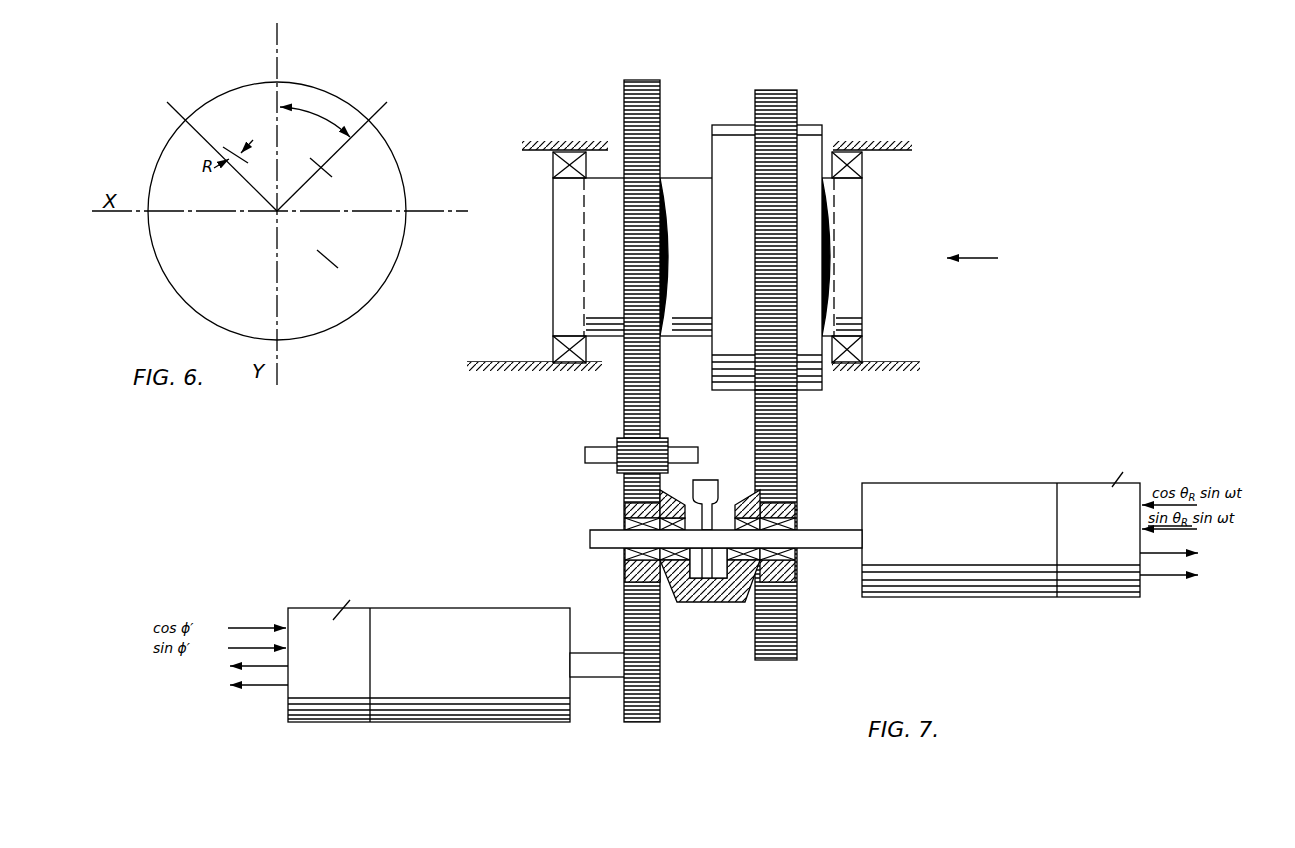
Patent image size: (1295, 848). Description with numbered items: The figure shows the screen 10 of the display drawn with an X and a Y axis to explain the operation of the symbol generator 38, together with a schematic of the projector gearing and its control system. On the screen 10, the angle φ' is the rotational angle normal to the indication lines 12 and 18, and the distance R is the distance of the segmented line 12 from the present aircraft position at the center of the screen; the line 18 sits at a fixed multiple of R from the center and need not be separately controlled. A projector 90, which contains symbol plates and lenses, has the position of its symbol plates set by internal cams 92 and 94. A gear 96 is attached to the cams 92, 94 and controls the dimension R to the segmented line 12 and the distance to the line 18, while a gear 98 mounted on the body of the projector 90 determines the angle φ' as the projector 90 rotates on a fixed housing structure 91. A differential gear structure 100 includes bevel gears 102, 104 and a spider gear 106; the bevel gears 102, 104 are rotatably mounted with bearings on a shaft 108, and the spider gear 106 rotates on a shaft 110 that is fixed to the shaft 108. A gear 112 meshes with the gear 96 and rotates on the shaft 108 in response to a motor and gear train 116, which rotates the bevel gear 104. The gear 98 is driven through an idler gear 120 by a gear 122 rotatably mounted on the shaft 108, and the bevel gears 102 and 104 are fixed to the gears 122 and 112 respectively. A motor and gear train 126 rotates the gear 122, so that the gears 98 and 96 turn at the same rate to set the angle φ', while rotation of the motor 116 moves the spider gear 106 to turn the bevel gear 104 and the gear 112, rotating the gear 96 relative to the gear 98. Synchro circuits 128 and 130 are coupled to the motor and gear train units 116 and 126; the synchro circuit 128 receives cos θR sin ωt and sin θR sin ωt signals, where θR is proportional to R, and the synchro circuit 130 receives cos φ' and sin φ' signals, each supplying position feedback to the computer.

In FIG. 6, the screen 10 is at (395, 155).
In FIG. 6, the indication line 12 is at (329, 266).
In FIG. 6, the line 18 is at (332, 173).
In FIG. 7, the symbol generator 38 is at (590, 539).
In FIG. 7, the projector 90 is at (548, 298).
In FIG. 7, the fixed housing structure 91 is at (578, 150).
In FIG. 7, the internal cam 92 is at (817, 124).
In FIG. 7, the internal cam 94 is at (727, 125).
In FIG. 7, the gear 96 is at (779, 90).
In FIG. 7, the gear 98 is at (662, 116).
In FIG. 7, the differential gear structure 100 is at (737, 606).
In FIG. 7, the bevel gear 102 is at (672, 493).
In FIG. 7, the bevel gear 104 is at (796, 627).
In FIG. 7, the spider gear 106 is at (678, 603).
In FIG. 7, the shaft 108 is at (806, 532).
In FIG. 7, the shaft 110 is at (717, 603).
In FIG. 7, the gear 112 is at (797, 437).
In FIG. 7, the motor and gear train 116 is at (928, 490).
In FIG. 7, the idler gear 120 is at (665, 445).
In FIG. 7, the gear 122 is at (625, 483).
In FIG. 7, the motor and gear train 126 is at (462, 685).
In FIG. 7, the synchro circuit 128 is at (1098, 565).
In FIG. 7, the synchro circuit 130 is at (345, 688).